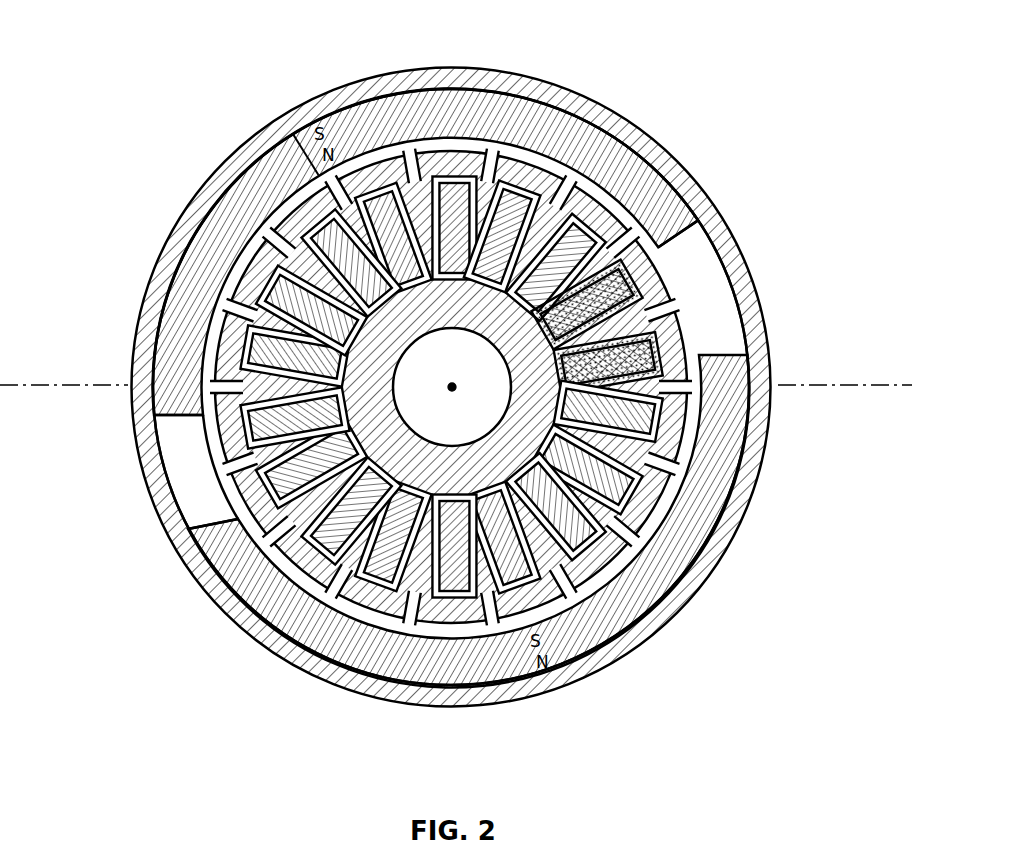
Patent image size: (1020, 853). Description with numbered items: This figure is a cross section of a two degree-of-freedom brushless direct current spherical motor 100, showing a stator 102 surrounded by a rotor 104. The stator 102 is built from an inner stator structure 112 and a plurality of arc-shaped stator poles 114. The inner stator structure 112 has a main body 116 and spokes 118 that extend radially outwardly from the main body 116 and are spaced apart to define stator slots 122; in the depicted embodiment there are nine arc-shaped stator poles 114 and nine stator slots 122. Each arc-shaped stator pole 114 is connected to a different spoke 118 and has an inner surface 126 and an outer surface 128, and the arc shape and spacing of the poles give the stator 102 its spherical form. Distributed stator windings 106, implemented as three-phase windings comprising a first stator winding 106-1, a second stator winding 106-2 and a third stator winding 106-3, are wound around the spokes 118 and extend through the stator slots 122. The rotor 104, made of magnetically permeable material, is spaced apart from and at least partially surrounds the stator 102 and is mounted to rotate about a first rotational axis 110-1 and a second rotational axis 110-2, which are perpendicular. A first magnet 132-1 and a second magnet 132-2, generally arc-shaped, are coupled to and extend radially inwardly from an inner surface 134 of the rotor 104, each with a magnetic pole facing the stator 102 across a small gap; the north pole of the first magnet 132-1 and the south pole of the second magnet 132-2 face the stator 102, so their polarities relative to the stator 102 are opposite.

The two degree-of-freedom brushless direct current spherical motor 100 is at (123, 98).
The stator 102 is at (604, 194).
The rotor 104 is at (651, 656).
The distributed stator windings 106 is at (419, 206).
The first stator winding 106-1 is at (275, 288).
The second stator winding 106-2 is at (253, 478).
The third stator winding 106-3 is at (370, 590).
The first rotational axis 110-1 is at (452, 387).
The second rotational axis 110-2 is at (822, 385).
The inner stator structure 112 is at (407, 411).
The arc-shaped stator poles 114 is at (483, 162).
The main body 116 is at (540, 300).
The spokes 118 is at (662, 210).
The stator slots 122 is at (537, 230).
The inner surface 126 is at (222, 200).
The outer surface 128 is at (300, 150).
The first magnet 132-1 is at (172, 400).
The second magnet 132-2 is at (257, 587).
The inner surface 134 is at (183, 482).